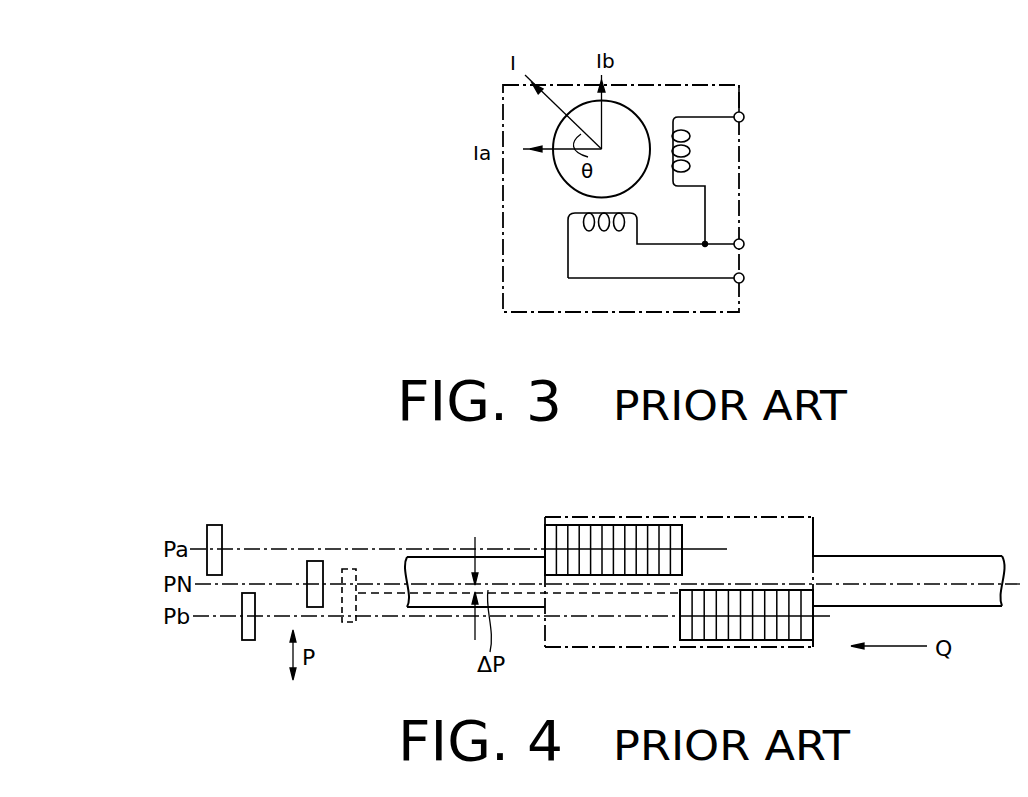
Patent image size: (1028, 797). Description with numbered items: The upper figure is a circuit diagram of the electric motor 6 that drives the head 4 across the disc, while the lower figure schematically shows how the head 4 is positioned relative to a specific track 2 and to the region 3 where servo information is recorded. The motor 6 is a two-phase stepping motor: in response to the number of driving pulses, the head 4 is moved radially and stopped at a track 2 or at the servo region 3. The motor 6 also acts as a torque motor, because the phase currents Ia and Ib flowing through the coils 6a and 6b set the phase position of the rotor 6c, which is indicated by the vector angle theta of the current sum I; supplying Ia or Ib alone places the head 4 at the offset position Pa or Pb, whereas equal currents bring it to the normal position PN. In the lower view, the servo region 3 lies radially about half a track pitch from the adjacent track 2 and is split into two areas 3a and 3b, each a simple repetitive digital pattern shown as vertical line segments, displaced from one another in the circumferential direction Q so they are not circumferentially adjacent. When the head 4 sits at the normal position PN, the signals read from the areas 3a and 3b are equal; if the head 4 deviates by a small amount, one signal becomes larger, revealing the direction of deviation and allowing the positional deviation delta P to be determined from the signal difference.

In FIG. 3, the electric motor 6 is at (708, 85).
In FIG. 3, the coil 6a is at (692, 151).
In FIG. 3, the coil 6b is at (600, 232).
In FIG. 3, the rotor 6c is at (560, 180).
In FIG. 4, the track 2 is at (437, 556).
In FIG. 4, the servo information region 3 is at (588, 508).
In FIG. 4, the servo information area 3a is at (683, 530).
In FIG. 4, the servo information area 3b is at (680, 636).
In FIG. 4, the head 4 is at (272, 520).